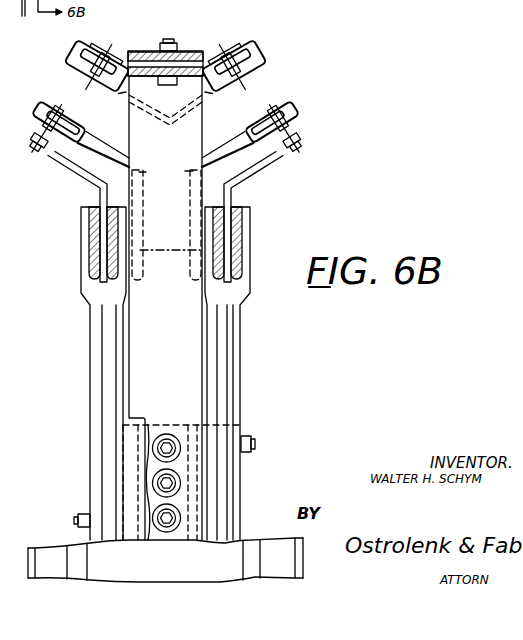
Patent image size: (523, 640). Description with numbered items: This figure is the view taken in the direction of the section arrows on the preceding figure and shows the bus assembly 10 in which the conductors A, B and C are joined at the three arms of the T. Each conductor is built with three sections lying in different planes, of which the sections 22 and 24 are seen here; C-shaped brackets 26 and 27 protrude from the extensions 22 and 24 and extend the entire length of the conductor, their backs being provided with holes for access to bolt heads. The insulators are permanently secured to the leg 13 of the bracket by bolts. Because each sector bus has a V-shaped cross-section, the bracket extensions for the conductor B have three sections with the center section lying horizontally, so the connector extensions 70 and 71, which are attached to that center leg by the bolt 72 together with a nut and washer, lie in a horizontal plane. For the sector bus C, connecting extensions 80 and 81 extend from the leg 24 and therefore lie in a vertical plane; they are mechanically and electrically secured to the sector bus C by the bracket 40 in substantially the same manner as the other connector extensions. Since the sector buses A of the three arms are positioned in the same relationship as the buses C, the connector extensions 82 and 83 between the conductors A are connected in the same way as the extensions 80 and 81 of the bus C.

The hanger body 10 is at (165, 329).
The leg 13 is at (182, 53).
The section 22 is at (143, 212).
The section 24 is at (205, 93).
The C-shaped bracket 26 is at (77, 50).
The C-shaped bracket 27 is at (266, 57).
The bracket 40 is at (107, 50).
The connector extension 70 is at (168, 45).
The connector extension 71 is at (221, 45).
The bolt 72 is at (170, 89).
The connecting extension 80 is at (223, 202).
The connecting extension 81 is at (235, 206).
The connector extension 82 is at (90, 241).
The connector extension 83 is at (118, 279).
The conductor A is at (148, 173).
The conductor B is at (170, 114).
The conductor C is at (182, 173).